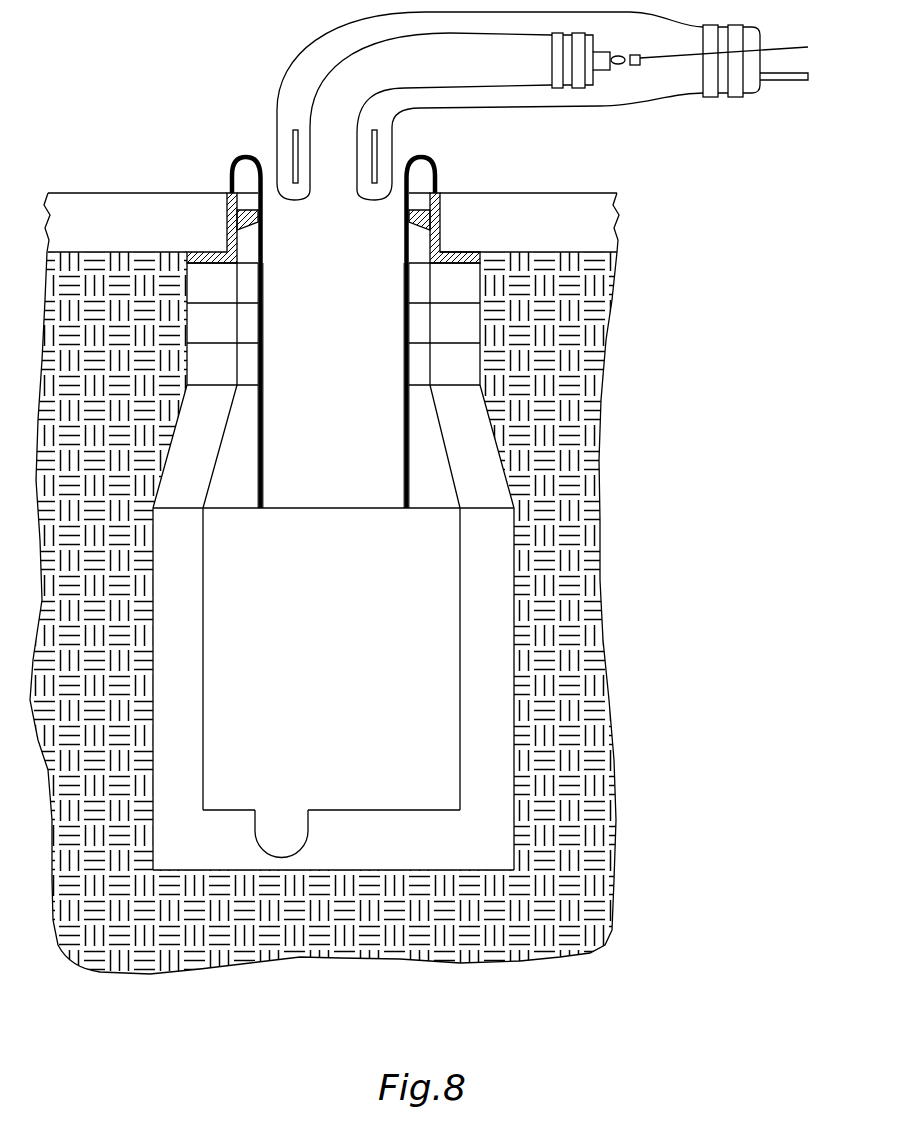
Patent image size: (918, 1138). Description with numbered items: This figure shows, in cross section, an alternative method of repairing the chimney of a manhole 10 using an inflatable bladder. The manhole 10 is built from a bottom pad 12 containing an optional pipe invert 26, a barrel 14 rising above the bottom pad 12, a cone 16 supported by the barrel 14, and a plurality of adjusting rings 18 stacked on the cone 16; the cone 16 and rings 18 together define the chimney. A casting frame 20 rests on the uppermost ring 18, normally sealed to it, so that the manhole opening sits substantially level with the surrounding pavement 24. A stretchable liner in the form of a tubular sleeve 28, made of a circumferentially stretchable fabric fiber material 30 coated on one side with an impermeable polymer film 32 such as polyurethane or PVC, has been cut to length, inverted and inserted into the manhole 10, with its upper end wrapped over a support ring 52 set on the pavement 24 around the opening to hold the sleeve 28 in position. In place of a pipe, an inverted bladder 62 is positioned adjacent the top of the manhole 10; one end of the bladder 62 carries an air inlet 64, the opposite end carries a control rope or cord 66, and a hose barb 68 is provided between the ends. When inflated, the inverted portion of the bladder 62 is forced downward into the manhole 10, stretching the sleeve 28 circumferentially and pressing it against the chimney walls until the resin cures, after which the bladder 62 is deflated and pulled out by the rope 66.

The manhole 10 is at (487, 106).
The bottom pad 12 is at (418, 817).
The barrel 14 is at (195, 689).
The cone 16 is at (200, 476).
The adjusting rings 18 is at (227, 287).
The casting frame 20 is at (227, 195).
The pavement 24 is at (130, 200).
The pipe invert 26 is at (280, 823).
The tubular sleeve 28 is at (264, 440).
The fabric fiber material 30 is at (246, 505).
The impermeable polymer film 32 is at (403, 256).
The support ring 52 is at (435, 171).
The inverted bladder 62 is at (310, 60).
The air inlet 64 is at (779, 81).
The control rope or cord 66 is at (779, 47).
The hose barb 68 is at (293, 140).